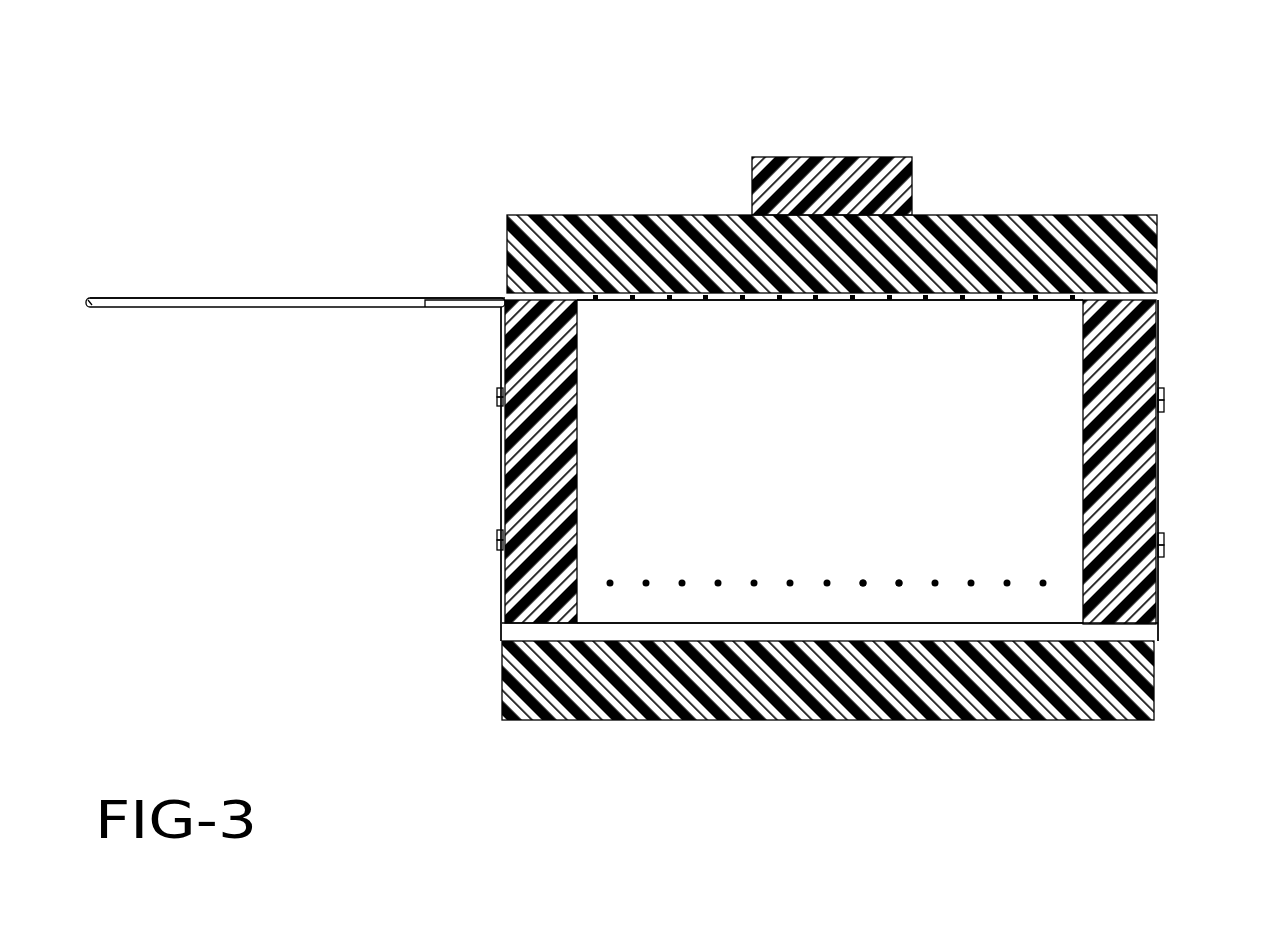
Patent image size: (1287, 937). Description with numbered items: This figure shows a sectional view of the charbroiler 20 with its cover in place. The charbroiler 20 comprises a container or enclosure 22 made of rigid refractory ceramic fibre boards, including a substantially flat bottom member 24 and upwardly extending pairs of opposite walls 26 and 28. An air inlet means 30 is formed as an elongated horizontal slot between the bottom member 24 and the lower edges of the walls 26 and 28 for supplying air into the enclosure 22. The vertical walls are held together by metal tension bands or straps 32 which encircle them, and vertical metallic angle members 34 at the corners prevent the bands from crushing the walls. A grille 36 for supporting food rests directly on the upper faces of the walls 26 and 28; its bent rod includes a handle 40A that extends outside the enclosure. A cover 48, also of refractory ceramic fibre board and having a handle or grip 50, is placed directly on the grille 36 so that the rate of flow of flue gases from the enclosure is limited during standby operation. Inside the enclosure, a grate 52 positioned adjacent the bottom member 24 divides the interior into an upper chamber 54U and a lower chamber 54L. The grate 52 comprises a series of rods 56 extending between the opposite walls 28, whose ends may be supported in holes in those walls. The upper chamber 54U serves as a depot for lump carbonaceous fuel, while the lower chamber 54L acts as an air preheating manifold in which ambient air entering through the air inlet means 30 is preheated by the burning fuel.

The charbroiler 20 is at (674, 428).
The container or enclosure 22 is at (500, 580).
The bottom or base member 24 is at (518, 693).
The opposite walls (end walls) 26 is at (530, 515).
The opposite walls (side walls) 28 is at (588, 352).
The air inlet means 30 is at (520, 633).
The tension bands or straps 32 is at (496, 392).
The angle members 34 is at (500, 452).
The grille 36 is at (370, 298).
The handle 40A is at (230, 298).
The cover 48 is at (995, 260).
The handle or grip 50 is at (845, 155).
The grate 52 is at (757, 590).
The upper chamber 54U is at (995, 420).
The lower chamber 54L is at (1035, 599).
The rods 56 is at (895, 590).